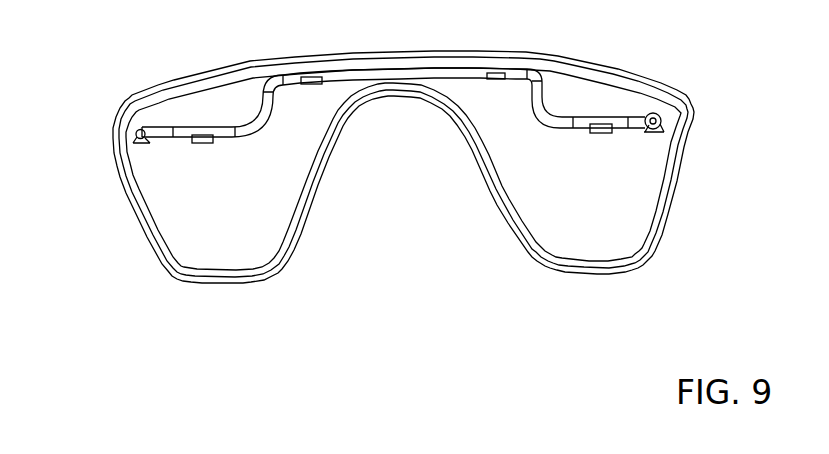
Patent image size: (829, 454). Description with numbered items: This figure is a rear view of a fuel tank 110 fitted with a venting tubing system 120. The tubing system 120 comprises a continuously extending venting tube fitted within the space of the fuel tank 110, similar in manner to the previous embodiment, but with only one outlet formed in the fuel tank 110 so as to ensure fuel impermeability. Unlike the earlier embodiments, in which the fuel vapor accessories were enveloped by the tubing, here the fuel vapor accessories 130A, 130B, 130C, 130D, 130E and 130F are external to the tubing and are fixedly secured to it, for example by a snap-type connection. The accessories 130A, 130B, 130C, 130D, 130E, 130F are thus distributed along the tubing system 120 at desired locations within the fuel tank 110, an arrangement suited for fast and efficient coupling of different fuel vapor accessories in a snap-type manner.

The fuel tank 110 is at (652, 277).
The venting tubing system 120 is at (556, 103).
The fuel vapor accessory 130A is at (656, 133).
The fuel vapor accessory 130B is at (601, 133).
The fuel vapor accessory 130C is at (494, 80).
The fuel vapor accessory 130D is at (313, 90).
The fuel vapor accessory 130E is at (204, 150).
The fuel vapor accessory 130F is at (137, 141).